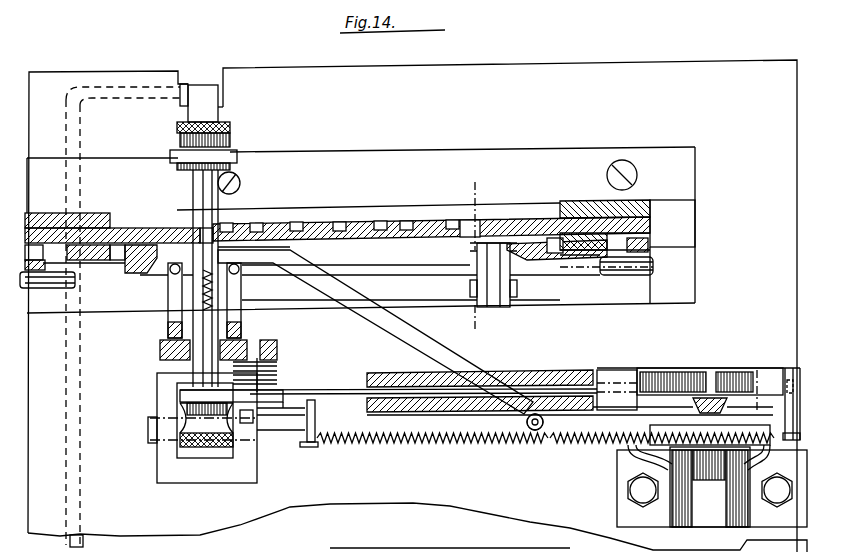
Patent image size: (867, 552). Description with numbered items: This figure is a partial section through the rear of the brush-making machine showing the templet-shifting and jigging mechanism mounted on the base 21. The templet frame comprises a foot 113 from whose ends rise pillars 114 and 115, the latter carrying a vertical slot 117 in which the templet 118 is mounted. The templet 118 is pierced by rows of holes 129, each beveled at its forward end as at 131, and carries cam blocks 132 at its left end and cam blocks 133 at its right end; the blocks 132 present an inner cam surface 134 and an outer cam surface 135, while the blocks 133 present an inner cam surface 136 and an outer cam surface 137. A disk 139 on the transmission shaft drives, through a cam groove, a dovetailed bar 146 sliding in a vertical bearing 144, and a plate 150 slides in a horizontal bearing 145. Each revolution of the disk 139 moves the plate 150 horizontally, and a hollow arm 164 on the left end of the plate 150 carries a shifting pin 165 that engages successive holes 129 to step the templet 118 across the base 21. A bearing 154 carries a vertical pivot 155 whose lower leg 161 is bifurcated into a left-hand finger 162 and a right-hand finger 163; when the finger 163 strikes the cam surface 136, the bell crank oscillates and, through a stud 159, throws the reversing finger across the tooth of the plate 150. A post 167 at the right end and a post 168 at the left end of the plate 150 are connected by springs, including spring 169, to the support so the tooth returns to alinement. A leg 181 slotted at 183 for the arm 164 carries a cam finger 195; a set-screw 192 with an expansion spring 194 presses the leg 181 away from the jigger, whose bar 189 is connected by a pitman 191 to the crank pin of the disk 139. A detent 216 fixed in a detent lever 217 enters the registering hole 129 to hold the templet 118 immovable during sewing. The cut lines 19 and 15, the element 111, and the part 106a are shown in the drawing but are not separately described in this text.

The base 21 is at (590, 70).
The detent lever 217 is at (233, 150).
The detent 216 is at (242, 185).
The left-hand finger 162 is at (165, 230).
The vertical pivot 155 is at (190, 224).
The pillar 114 is at (43, 213).
The inner cam surface 134 is at (152, 234).
The holes 129 is at (378, 224).
The inner cam surface 136 is at (505, 222).
The section line 19 is at (450, 180).
The outer cam surface 137 is at (532, 258).
The foot 113 is at (540, 215).
The templet 118 is at (587, 203).
The slot 117 is at (633, 200).
The pillar 115 is at (645, 196).
The cam blocks 133 is at (600, 272).
The bevel 131 is at (460, 242).
The lower leg 161 is at (385, 333).
The right-hand finger 163 is at (253, 217).
The cam blocks 132 is at (133, 262).
The outer cam surface 135 is at (148, 273).
The cam finger 195 is at (168, 305).
The slot 183 is at (245, 342).
The leg 181 is at (162, 350).
The hollow arm 164 is at (200, 369).
The set-screw 192 is at (277, 371).
The bar 189 is at (148, 432).
The expansion spring 194 is at (257, 468).
The post 168 is at (307, 410).
The plate 150 is at (380, 400).
The horizontal bearing 145 is at (598, 370).
The section line 15 is at (778, 322).
The vertical bearing 144 is at (707, 400).
The post 167 is at (725, 419).
The pitman 191 is at (350, 442).
The shifting pin 165 is at (603, 445).
The rod 111 is at (405, 443).
The bearing 154 is at (530, 428).
The spring 169 is at (648, 442).
The disk 139 is at (668, 456).
The bar 146 is at (717, 551).
The stud 159 is at (350, 548).
The base part 106a is at (450, 551).